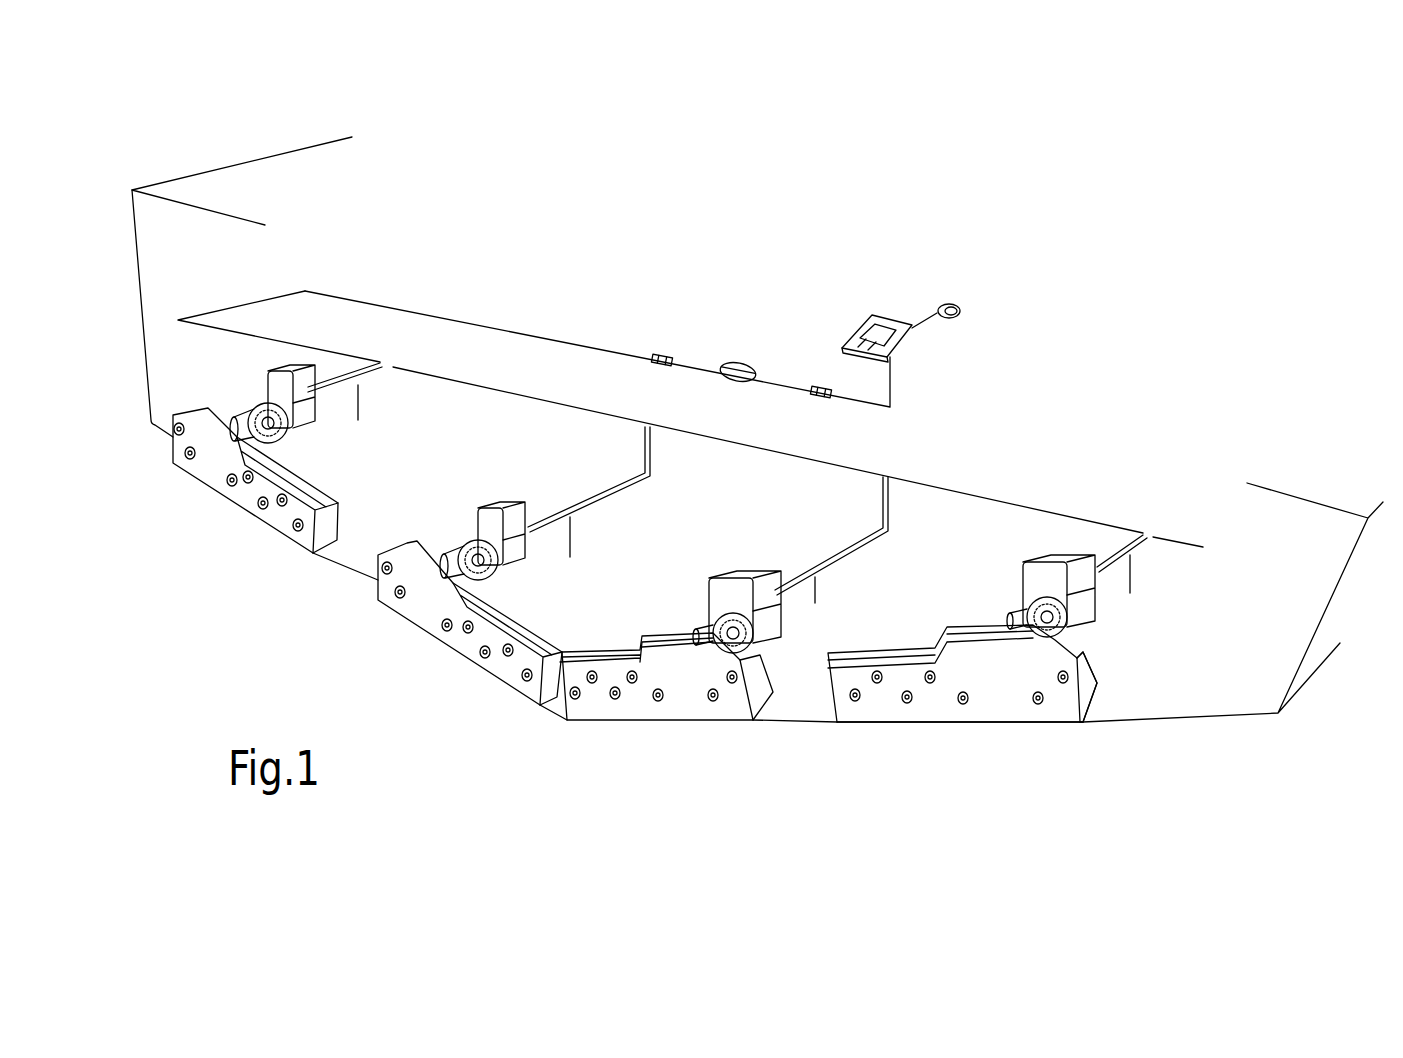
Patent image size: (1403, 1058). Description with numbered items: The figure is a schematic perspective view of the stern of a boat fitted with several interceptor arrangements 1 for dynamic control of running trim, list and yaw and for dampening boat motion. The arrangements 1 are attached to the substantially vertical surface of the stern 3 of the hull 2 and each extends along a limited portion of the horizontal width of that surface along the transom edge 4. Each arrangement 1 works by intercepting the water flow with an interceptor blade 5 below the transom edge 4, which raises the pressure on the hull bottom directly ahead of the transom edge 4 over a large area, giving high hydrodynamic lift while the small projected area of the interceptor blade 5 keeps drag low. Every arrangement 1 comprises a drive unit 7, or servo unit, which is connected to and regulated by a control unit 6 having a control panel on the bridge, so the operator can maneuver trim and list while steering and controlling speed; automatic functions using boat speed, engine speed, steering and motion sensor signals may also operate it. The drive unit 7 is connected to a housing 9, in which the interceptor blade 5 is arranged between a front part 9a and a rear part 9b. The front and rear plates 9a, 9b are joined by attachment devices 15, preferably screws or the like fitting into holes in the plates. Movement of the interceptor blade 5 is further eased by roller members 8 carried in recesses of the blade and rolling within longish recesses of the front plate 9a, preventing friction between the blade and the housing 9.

The interceptor arrangement 1 is at (540, 759).
The hull 2 is at (191, 168).
The stern 3 is at (158, 392).
The transom edge 4 is at (1205, 714).
The interceptor blade 5 is at (328, 556).
The control unit 6 is at (898, 298).
The drive unit 7 is at (289, 355).
The roller members 8 is at (360, 403).
The housing 9 is at (775, 678).
The front part 9a is at (1097, 668).
The rear part 9b is at (943, 717).
The attachment devices 15 is at (853, 702).